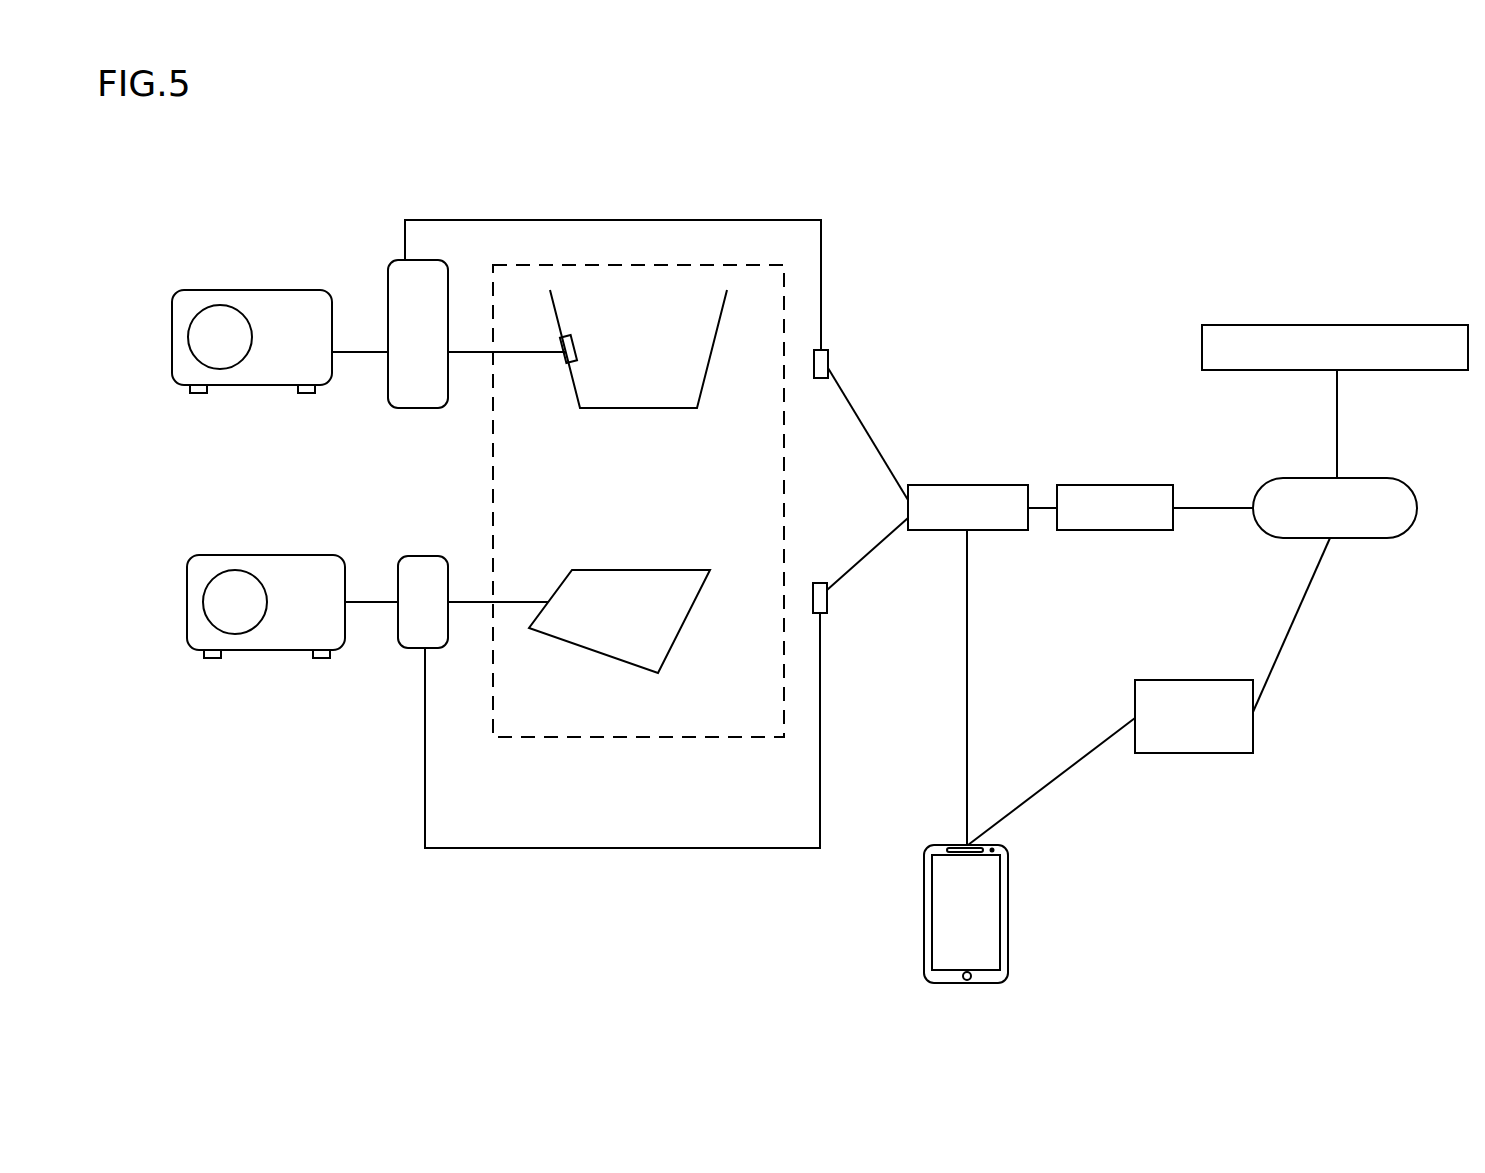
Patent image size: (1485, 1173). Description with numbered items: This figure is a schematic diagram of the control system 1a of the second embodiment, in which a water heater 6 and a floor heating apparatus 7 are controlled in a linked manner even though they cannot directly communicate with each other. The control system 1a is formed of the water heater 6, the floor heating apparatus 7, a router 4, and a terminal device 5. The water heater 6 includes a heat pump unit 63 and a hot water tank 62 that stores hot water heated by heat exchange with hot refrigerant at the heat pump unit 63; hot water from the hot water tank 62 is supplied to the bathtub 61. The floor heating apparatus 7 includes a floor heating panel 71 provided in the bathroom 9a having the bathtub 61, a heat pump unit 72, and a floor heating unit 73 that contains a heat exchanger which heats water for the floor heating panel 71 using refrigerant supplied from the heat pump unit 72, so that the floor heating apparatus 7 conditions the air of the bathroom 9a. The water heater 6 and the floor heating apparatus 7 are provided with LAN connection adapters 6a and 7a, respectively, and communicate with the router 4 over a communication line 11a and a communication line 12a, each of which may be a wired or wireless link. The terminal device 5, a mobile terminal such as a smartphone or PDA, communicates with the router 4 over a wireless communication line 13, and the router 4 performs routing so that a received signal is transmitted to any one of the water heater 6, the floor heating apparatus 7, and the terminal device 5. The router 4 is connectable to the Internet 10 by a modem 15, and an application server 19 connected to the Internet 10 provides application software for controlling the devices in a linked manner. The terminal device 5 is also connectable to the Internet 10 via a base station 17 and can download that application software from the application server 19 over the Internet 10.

The control system 1a is at (228, 202).
The terminal device 5 is at (892, 833).
The water heater 6 is at (478, 299).
The floor heating apparatus 7 is at (448, 583).
The bathtub 61 is at (705, 365).
The hot water tank 62 is at (395, 260).
The heat pump unit 63 is at (215, 290).
The floor heating panel 71 is at (637, 570).
The heat pump unit 72 is at (237, 555).
The floor heating unit 73 is at (418, 556).
The LAN connection adapter 6a is at (830, 355).
The LAN connection adapter 7a is at (820, 583).
The bathroom 9a is at (708, 737).
The communication line 11a is at (870, 430).
The communication line 12a is at (862, 563).
The communication line 13 is at (968, 630).
The router 4 is at (992, 485).
The modem 15 is at (1143, 485).
The Internet 10 is at (1373, 478).
The application server 19 is at (1373, 325).
The base station 17 is at (1210, 680).